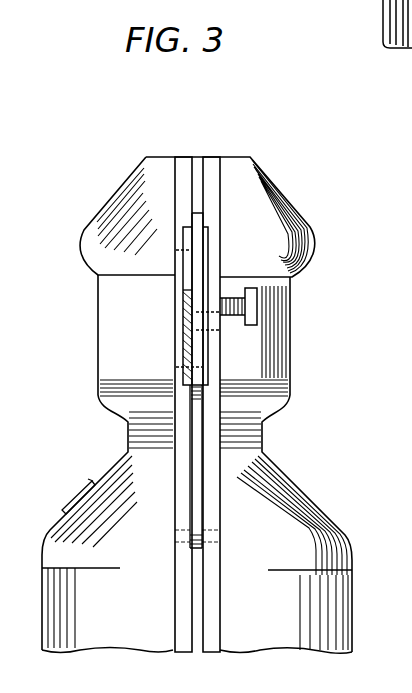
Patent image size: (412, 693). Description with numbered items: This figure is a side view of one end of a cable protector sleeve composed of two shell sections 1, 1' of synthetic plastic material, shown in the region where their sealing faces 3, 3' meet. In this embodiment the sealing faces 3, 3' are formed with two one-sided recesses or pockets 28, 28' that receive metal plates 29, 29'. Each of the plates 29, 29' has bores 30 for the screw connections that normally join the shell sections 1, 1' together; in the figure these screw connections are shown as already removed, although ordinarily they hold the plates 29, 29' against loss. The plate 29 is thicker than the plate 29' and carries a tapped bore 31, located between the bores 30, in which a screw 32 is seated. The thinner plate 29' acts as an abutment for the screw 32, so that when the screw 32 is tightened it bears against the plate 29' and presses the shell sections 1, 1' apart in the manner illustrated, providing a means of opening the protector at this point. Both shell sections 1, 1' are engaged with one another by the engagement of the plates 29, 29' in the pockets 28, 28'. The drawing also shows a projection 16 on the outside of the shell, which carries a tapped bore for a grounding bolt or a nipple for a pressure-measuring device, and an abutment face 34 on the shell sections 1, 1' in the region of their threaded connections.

The shell section 1 is at (259, 405).
The shell section 1' is at (90, 405).
The sealing face 3 is at (217, 386).
The sealing face 3' is at (181, 386).
The projection 16 is at (80, 494).
The recess or pocket 28 is at (241, 185).
The recess or pocket 28' is at (145, 186).
The metal plate 29 is at (218, 306).
The metal plate 29' is at (164, 301).
The bore 30 is at (176, 250).
The tapped bore 31 is at (207, 327).
The screw 32 is at (257, 302).
The abutment face 34 is at (197, 548).